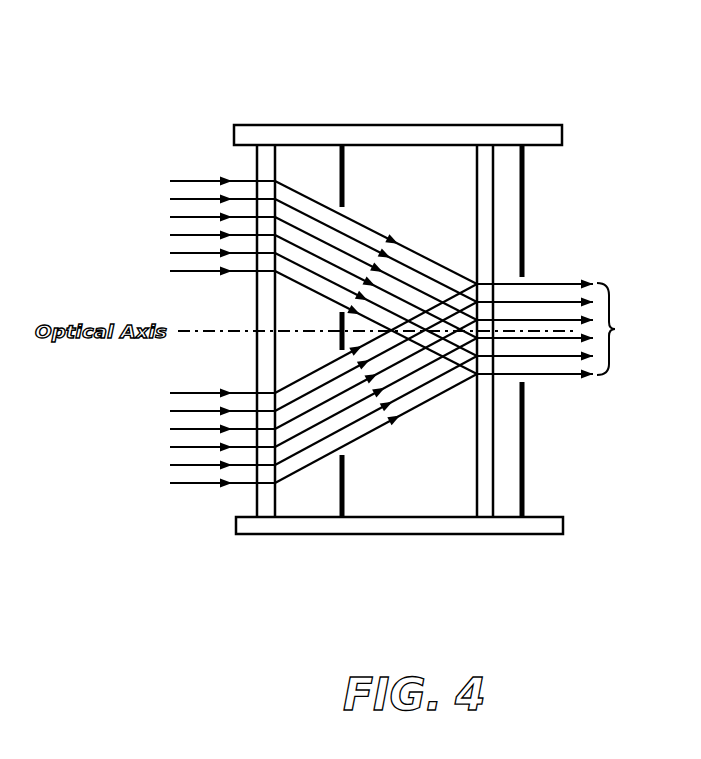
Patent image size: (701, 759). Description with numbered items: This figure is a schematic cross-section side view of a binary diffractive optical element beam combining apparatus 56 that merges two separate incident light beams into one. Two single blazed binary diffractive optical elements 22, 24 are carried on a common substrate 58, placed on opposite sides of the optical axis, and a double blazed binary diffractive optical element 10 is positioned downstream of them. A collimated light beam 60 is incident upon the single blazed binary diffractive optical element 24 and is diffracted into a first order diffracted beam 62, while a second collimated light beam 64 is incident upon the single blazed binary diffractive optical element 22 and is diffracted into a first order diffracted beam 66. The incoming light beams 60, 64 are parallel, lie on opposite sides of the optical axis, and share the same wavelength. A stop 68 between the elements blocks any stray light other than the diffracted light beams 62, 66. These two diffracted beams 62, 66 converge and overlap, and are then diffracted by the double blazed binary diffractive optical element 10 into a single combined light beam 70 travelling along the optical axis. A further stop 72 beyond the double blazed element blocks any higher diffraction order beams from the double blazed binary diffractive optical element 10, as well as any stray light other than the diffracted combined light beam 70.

The beam combining apparatus 56 is at (400, 76).
The common substrate 58 is at (257, 498).
The single blazed binary diffractive optical element 22 is at (287, 330).
The single blazed binary diffractive optical element 24 is at (275, 177).
The double blazed binary diffractive optical element 10 is at (477, 493).
The stop 68 is at (340, 488).
The stop 72 is at (527, 488).
The collimated light beam 60 is at (183, 180).
The collimated light beam 64 is at (183, 392).
The first order diffracted beam 62 is at (313, 293).
The first order diffracted beam 66 is at (313, 370).
The combined light beam 70 is at (565, 329).